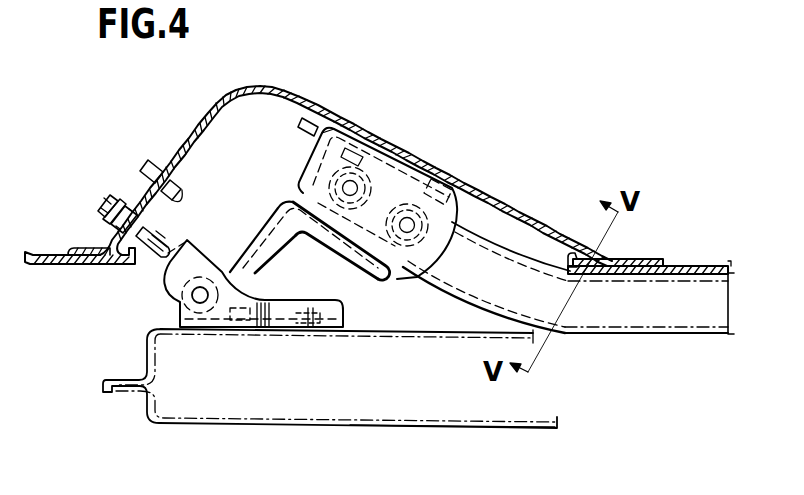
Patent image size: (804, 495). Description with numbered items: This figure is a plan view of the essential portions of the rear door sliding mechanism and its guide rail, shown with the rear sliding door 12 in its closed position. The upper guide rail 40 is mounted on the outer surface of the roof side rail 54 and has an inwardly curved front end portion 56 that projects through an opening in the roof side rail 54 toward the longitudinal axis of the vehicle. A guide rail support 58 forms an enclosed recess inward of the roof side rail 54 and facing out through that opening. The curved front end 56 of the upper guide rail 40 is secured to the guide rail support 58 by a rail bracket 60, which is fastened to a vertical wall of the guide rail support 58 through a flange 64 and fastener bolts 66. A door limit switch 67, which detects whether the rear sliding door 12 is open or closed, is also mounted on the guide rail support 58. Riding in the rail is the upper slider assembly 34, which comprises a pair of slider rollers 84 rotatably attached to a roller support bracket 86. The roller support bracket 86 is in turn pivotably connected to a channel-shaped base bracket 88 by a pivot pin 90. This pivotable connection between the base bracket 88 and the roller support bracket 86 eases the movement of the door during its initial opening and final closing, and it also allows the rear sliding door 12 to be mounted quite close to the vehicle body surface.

The rear sliding door 12 is at (360, 430).
The upper slider assembly 34 is at (337, 277).
The upper guide rail 40 is at (662, 320).
The roof side rail 54 is at (697, 265).
The curved front end portion 56 is at (447, 270).
The guide rail support 58 is at (539, 218).
The rail bracket 60 is at (442, 206).
The flange 64 is at (327, 124).
The fastener bolts 66 is at (313, 118).
The door limit switch 67 is at (128, 192).
The slider rollers 84 is at (352, 186).
The roller support bracket 86 is at (280, 206).
The base bracket 88 is at (279, 302).
The pivot pin 90 is at (191, 296).